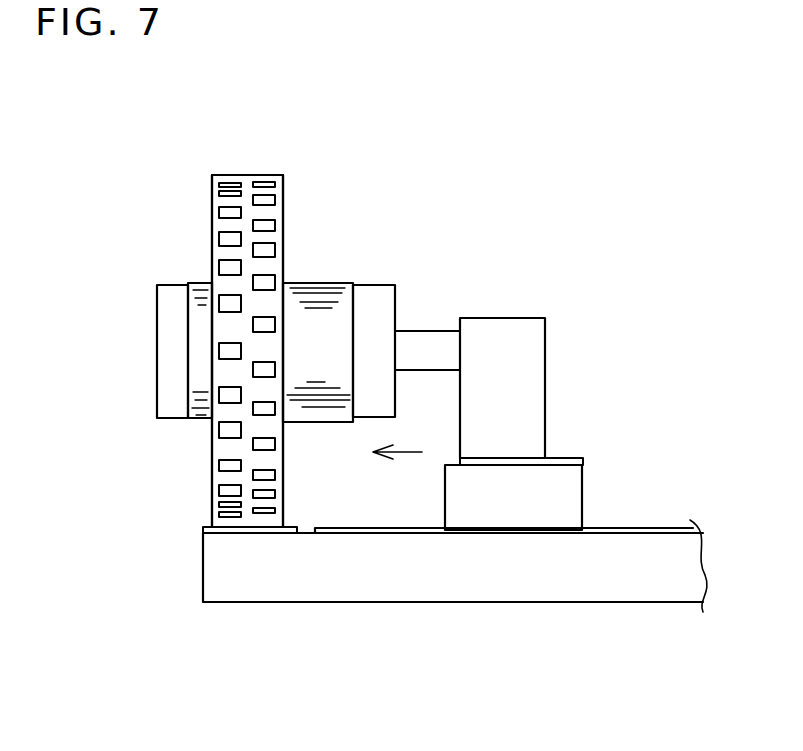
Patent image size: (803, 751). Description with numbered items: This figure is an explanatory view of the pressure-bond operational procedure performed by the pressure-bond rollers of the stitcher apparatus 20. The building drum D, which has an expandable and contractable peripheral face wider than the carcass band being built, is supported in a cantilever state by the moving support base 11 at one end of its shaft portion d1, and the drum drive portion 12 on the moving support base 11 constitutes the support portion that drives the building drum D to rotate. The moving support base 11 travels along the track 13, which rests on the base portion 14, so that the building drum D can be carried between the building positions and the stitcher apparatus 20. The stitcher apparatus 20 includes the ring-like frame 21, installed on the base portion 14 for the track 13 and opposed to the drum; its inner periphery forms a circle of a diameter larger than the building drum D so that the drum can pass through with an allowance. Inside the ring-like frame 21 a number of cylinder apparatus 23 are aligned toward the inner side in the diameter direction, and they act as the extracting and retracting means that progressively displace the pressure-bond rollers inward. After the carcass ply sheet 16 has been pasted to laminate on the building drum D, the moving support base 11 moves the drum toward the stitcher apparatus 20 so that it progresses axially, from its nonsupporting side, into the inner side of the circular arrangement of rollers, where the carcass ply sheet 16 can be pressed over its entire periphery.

The moving support base 11 is at (558, 493).
The drum drive portion 12 is at (523, 338).
The track 13 is at (637, 530).
The base portion 14 is at (586, 585).
The carcass ply sheet 16 is at (200, 320).
The stitcher apparatus 20 is at (239, 296).
The ring-like frame 21 is at (218, 198).
The cylinder apparatus 23 is at (258, 410).
The building drum D is at (375, 302).
The shaft portion d1 is at (435, 342).